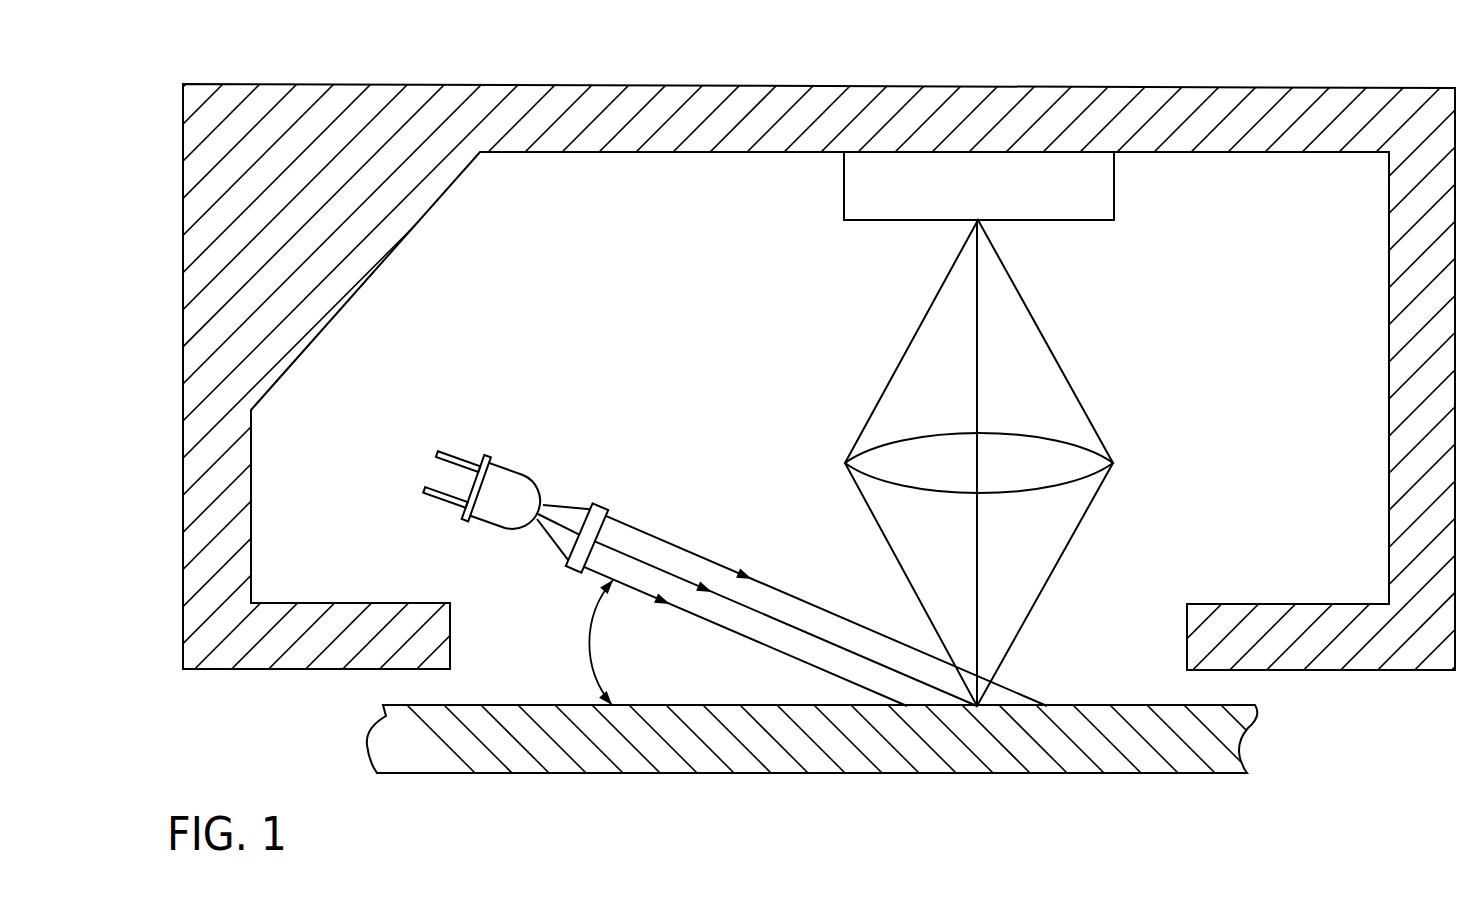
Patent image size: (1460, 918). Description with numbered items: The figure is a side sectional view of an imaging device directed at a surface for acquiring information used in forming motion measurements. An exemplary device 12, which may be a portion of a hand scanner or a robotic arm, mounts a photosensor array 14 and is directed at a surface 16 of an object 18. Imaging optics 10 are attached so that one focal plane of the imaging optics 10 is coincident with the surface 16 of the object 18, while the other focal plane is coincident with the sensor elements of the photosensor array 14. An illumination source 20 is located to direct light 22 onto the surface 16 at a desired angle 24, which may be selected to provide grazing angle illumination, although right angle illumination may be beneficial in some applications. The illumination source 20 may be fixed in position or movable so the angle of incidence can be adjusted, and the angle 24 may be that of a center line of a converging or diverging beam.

The imaging optics 10 is at (1068, 443).
The device 12 is at (1296, 88).
The photosensor array 14 is at (1093, 222).
The surface 16 is at (698, 700).
The object 18 is at (1147, 773).
The illumination source 20 is at (508, 467).
The light 22 is at (699, 552).
The angle 24 is at (588, 642).